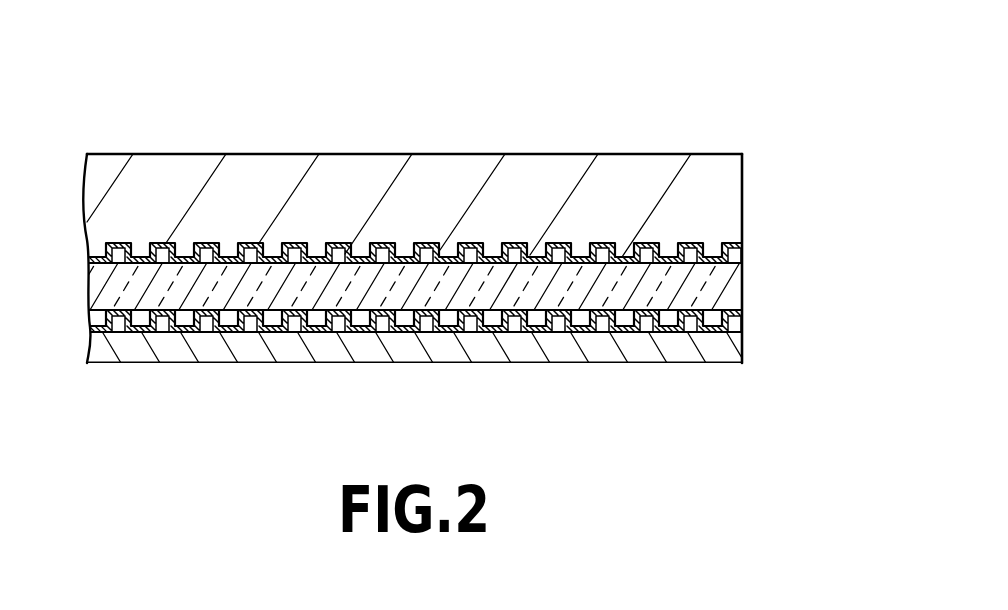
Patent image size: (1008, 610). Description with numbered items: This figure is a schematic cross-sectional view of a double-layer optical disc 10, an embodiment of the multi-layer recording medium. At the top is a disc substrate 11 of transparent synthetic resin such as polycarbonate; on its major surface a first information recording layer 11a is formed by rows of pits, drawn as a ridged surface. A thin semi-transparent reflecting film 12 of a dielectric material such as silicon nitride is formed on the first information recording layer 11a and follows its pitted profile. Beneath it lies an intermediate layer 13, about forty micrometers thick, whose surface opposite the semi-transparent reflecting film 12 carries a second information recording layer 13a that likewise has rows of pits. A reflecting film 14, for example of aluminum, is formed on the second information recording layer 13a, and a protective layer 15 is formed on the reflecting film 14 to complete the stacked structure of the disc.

The electrochromic device 10 is at (700, 100).
The first substrate 11 is at (725, 179).
The ridged surface of first substrate 11a is at (710, 250).
The first electrode layer 12 is at (740, 246).
The electrolyte layer 13 is at (743, 282).
The ridged surface of electrolyte layer 13a is at (743, 302).
The second electrode layer 14 is at (743, 315).
The second substrate 15 is at (723, 348).